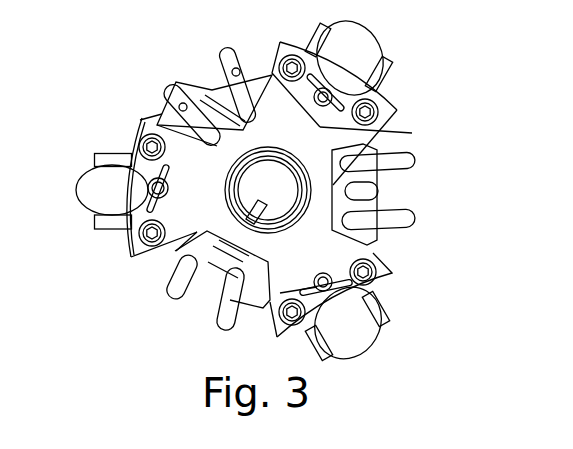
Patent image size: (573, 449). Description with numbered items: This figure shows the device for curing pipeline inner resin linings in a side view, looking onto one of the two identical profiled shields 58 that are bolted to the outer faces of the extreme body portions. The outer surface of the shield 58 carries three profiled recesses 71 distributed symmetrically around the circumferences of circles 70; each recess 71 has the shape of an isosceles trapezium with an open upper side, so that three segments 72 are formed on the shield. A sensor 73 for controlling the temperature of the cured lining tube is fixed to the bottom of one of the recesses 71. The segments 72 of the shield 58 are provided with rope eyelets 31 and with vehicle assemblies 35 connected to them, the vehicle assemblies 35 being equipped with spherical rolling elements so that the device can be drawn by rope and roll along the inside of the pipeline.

The rope eyelets 31 is at (312, 100).
The vehicle assemblies 35 is at (84, 188).
The profiled shields 58 is at (308, 183).
The circles 70 is at (137, 250).
The profiled recesses 71 is at (273, 77).
The segments 72 is at (327, 253).
The sensor 73 is at (212, 235).